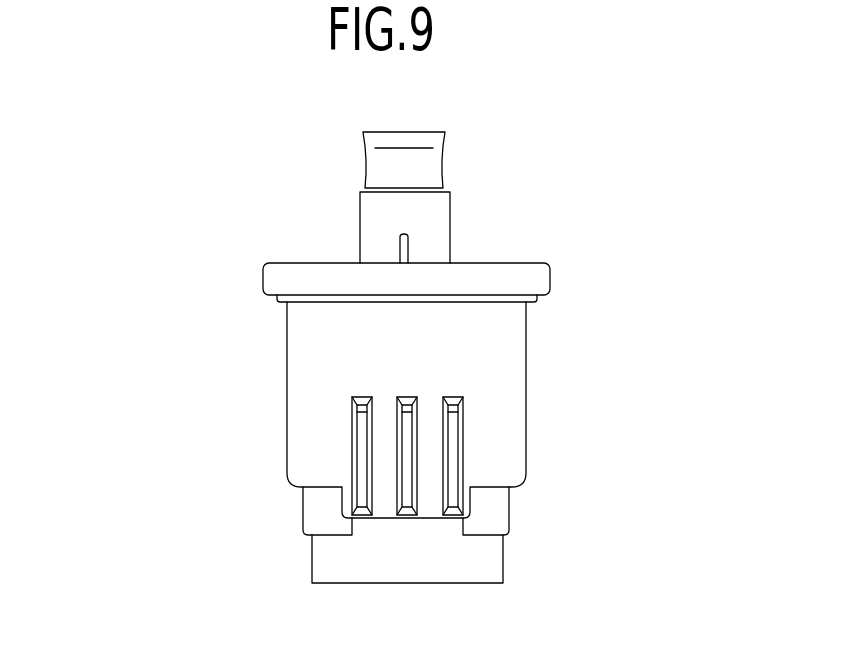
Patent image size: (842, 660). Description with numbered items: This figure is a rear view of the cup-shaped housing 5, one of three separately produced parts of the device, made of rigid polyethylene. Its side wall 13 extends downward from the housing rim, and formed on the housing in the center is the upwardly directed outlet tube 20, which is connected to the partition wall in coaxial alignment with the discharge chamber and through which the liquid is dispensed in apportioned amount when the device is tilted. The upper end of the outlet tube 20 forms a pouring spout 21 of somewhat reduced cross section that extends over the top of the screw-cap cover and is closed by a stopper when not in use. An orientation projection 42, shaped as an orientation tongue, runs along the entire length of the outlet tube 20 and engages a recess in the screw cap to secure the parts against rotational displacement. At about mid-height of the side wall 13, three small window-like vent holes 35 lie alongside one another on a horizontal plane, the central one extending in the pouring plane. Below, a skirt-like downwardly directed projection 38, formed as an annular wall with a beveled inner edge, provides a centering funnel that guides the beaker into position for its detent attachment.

The cup-shaped housing 5 is at (431, 346).
The side wall 13 is at (287, 352).
The outlet tube 20 is at (450, 218).
The pouring spout 21 is at (446, 133).
The vent holes 35 is at (365, 411).
The skirt-like projection 38 is at (505, 557).
The orientation projection 42 is at (397, 255).